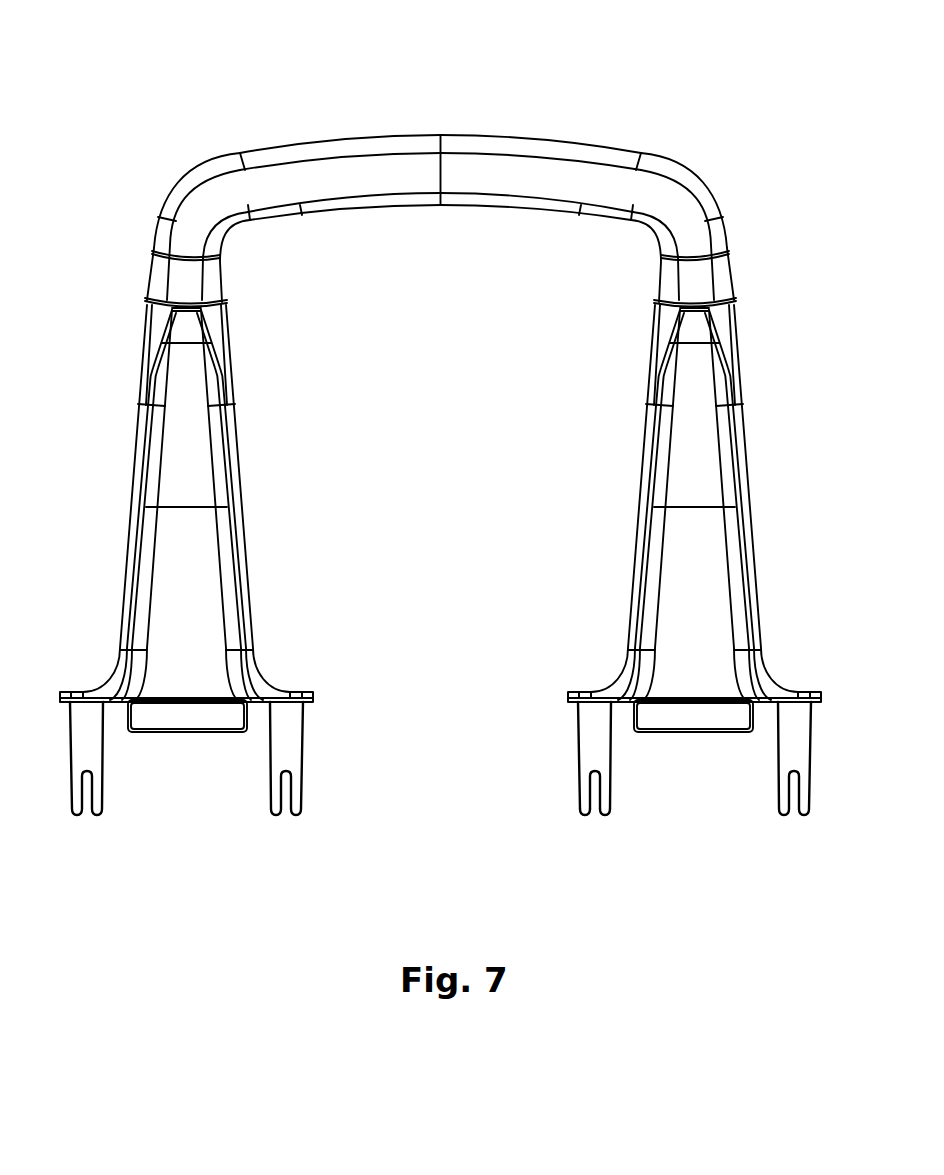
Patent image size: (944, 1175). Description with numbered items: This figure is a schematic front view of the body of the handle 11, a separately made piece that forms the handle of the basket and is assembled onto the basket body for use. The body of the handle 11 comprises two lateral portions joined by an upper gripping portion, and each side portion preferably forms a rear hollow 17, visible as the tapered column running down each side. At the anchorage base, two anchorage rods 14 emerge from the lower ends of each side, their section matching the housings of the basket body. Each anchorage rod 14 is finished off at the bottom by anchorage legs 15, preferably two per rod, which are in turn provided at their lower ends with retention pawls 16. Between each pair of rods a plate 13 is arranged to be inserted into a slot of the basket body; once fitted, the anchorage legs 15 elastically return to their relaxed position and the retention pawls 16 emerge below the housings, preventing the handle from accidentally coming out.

The body of the handle 11 is at (357, 128).
The rear hollow 17 is at (188, 460).
The plate 13 is at (190, 730).
The anchorage rod 14 is at (310, 753).
The anchorage leg 15 is at (588, 788).
The retention pawl 16 is at (583, 812).